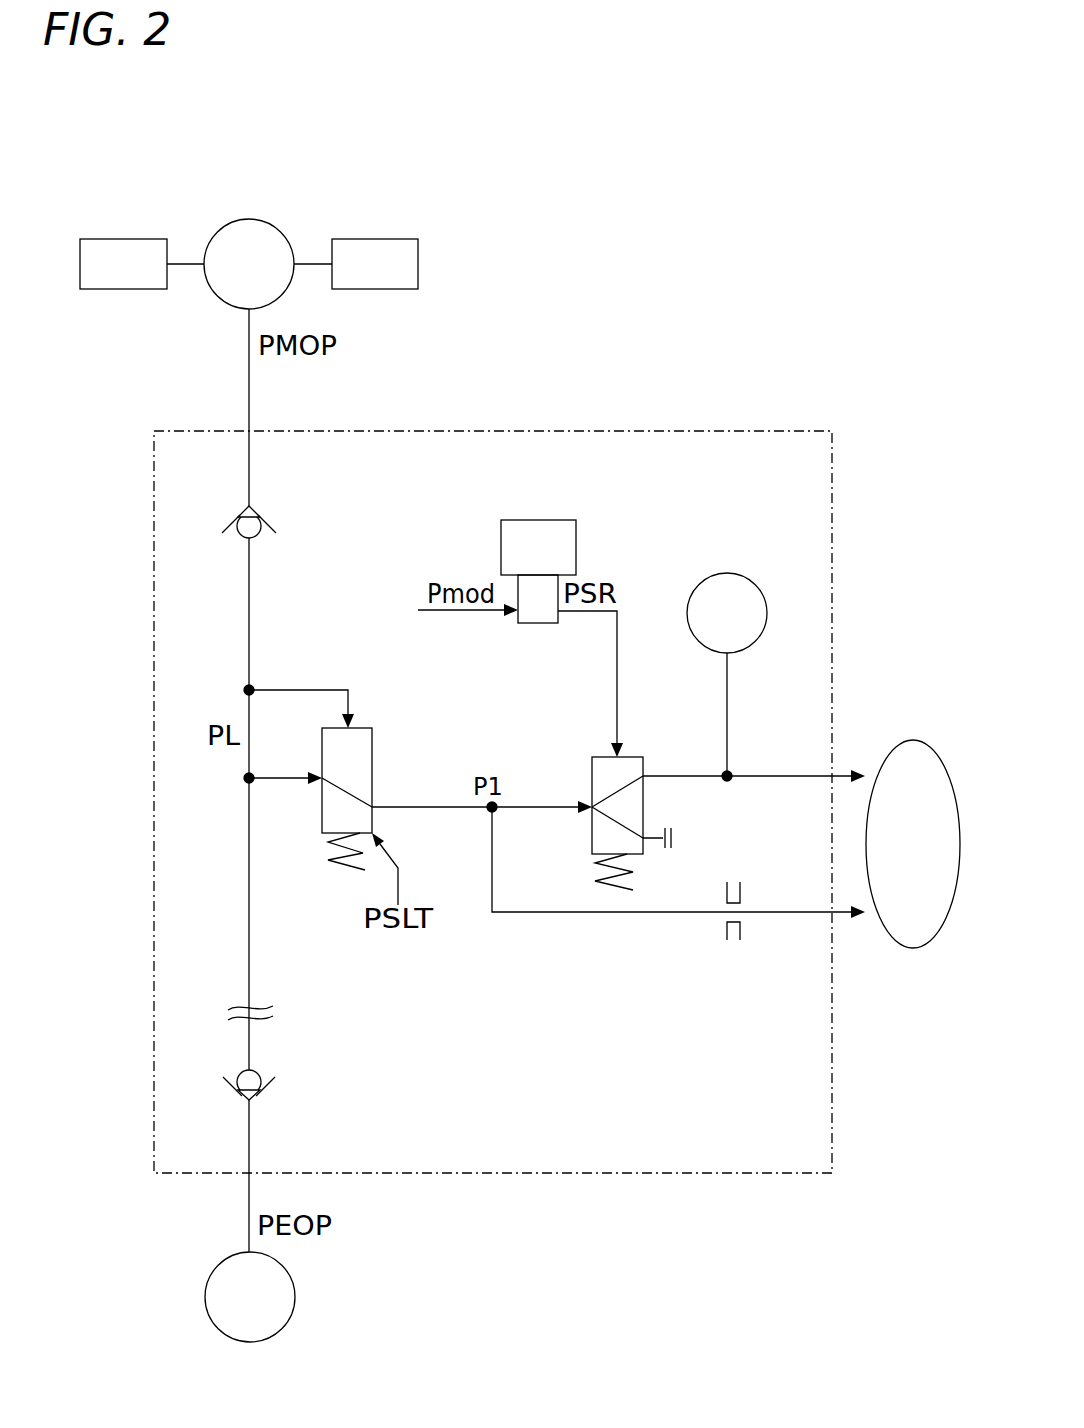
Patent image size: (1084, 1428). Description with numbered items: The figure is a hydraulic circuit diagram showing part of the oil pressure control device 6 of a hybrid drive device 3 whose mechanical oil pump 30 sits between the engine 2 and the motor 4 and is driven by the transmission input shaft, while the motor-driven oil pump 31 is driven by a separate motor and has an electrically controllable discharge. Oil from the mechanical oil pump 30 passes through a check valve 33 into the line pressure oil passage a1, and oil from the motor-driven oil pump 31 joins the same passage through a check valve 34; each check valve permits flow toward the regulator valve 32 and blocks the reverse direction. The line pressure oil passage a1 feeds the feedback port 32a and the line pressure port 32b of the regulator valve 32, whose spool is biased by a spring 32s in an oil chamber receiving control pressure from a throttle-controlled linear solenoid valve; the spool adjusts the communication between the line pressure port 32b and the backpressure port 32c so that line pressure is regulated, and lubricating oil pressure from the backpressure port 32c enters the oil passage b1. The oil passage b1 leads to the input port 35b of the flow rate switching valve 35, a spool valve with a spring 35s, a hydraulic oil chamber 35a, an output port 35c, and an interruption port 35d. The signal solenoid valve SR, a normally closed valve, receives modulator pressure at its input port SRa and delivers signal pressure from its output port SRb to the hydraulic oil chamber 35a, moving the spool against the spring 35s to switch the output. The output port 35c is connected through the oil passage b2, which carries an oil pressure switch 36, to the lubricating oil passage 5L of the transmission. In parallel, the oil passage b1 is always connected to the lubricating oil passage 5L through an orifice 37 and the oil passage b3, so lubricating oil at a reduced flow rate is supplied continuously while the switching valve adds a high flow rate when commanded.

The engine 2 is at (392, 289).
The hybrid drive device 3 is at (661, 168).
The motor 4 is at (120, 289).
The oil pressure control device 6 is at (542, 431).
The mechanical oil pump 30 is at (273, 221).
The motor-driven oil pump 31 is at (205, 1297).
The regulator valve 32 is at (400, 757).
The feedback port 32a is at (352, 727).
The line pressure port 32b is at (320, 782).
The backpressure port 32c is at (373, 803).
The spring 32s is at (347, 868).
The check valve 33 is at (260, 515).
The check valve 34 is at (263, 1090).
The flow rate switching valve 35 is at (592, 777).
The hydraulic oil chamber 35a is at (620, 755).
The input port 35b is at (592, 810).
The output port 35c is at (643, 775).
The interruption port 35d is at (645, 838).
The spring 35s is at (633, 873).
The oil pressure switch 36 is at (762, 590).
The orifice 37 is at (725, 932).
The lubricating oil passage 5L is at (912, 740).
The signal solenoid valve SR is at (579, 504).
The input port SRa is at (518, 618).
The output port SRb is at (558, 612).
The line pressure oil passage a1 is at (249, 933).
The oil passage b1 is at (447, 812).
The oil passage b2 is at (778, 773).
The oil passage b3 is at (778, 915).